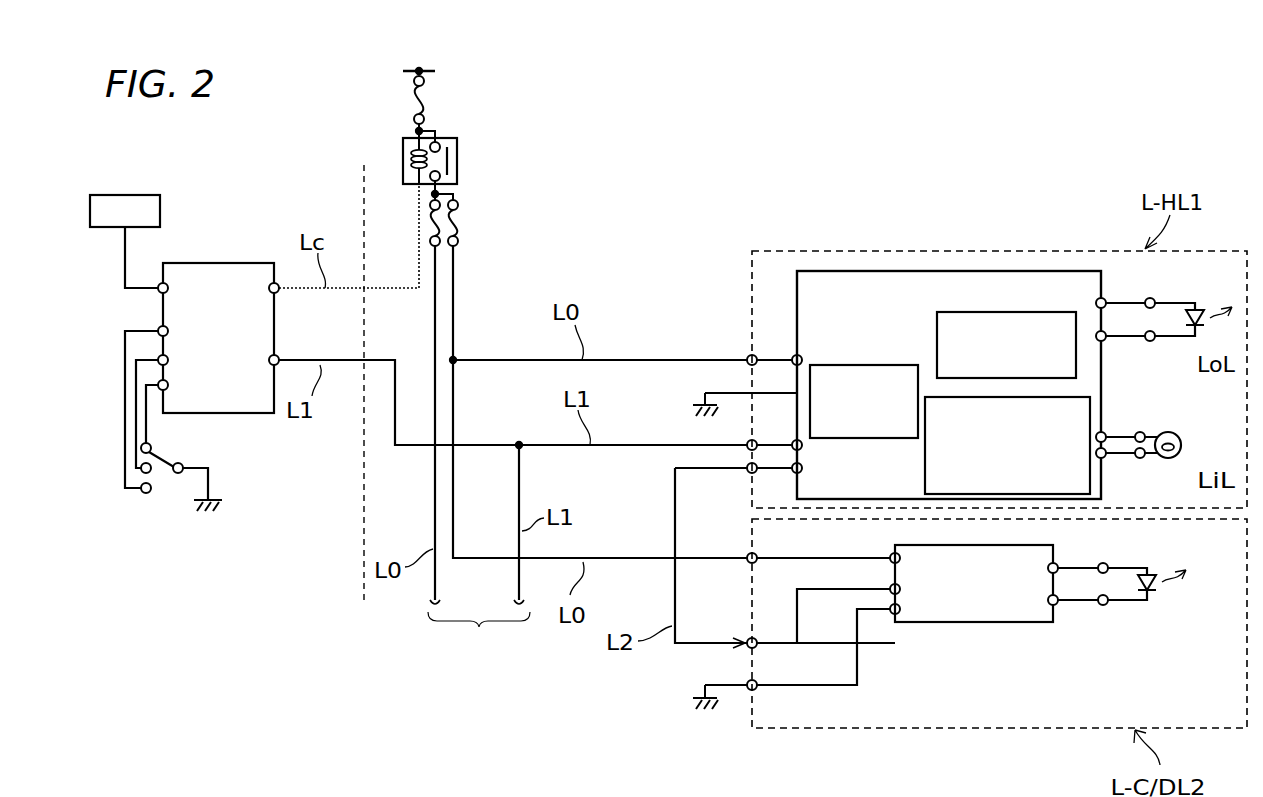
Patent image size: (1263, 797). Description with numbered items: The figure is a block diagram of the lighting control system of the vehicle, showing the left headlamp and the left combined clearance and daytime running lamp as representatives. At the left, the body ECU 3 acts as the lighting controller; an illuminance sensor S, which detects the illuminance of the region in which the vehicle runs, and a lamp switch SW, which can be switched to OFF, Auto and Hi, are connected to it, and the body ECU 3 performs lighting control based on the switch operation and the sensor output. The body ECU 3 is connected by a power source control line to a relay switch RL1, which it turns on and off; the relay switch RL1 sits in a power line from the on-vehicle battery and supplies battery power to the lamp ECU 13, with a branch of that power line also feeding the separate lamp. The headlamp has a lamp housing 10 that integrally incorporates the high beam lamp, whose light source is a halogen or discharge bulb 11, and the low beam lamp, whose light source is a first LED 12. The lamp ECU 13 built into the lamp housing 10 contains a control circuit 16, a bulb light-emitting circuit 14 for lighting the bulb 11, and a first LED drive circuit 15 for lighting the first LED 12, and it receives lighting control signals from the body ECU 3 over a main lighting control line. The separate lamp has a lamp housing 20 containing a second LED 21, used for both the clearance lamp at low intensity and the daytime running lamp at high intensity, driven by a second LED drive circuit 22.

The body ECU 3 is at (242, 263).
The lamp housing 10 is at (926, 251).
The bulb 11 is at (1182, 442).
The LED 12 is at (1173, 303).
The lamp ECU 13 is at (820, 271).
The bulb light-emitting circuit 14 is at (925, 480).
The first LED drive circuit 15 is at (1008, 312).
The control circuit 16 is at (882, 365).
The lamp housing 20 is at (908, 728).
The LED 21 is at (1156, 593).
The second LED drive circuit 22 is at (943, 622).
The illuminance sensor S is at (140, 195).
The lamp switch SW is at (147, 497).
The relay switch RL1 is at (460, 165).